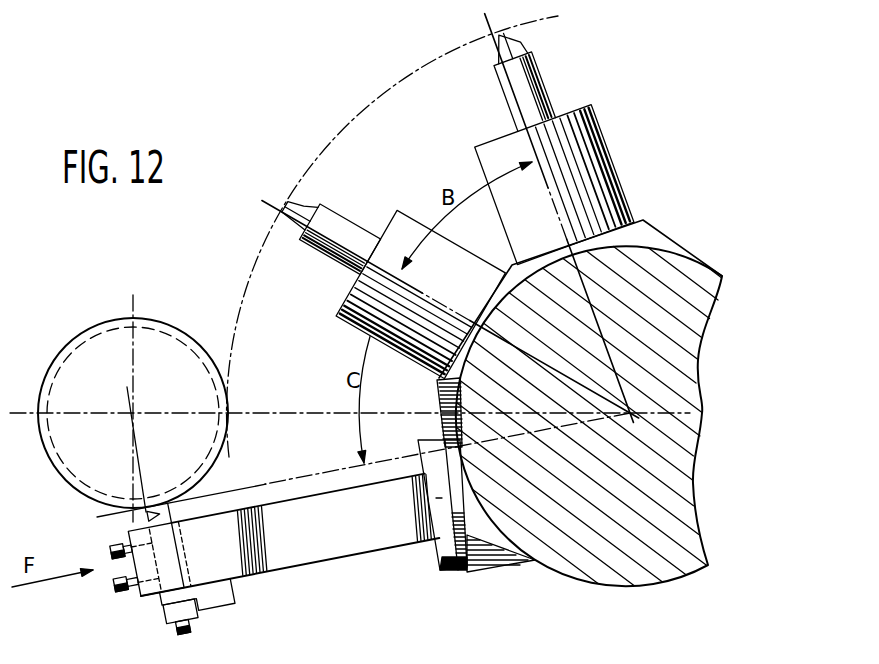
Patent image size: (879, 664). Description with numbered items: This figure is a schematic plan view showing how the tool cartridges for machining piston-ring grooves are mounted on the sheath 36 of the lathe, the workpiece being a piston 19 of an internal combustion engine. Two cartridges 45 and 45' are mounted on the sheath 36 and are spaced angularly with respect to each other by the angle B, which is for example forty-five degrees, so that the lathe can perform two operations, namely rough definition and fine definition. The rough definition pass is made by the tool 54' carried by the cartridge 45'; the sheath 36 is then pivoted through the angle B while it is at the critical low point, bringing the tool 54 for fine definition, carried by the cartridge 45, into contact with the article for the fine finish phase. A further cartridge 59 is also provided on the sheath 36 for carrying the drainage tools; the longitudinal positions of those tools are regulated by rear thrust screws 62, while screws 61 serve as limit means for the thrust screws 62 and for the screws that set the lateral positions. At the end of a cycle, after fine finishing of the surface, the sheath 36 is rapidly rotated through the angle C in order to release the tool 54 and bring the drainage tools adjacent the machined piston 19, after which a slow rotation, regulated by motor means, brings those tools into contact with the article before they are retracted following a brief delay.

The piston 19 is at (82, 336).
The sheath 36 is at (690, 278).
The cartridge 45 is at (390, 276).
The cartridge 45' is at (542, 152).
The tool 54 is at (291, 201).
The tool 54' is at (494, 36).
The cartridge 59 is at (307, 544).
The screws 61 is at (107, 562).
The rear thrust screws 62 is at (187, 628).